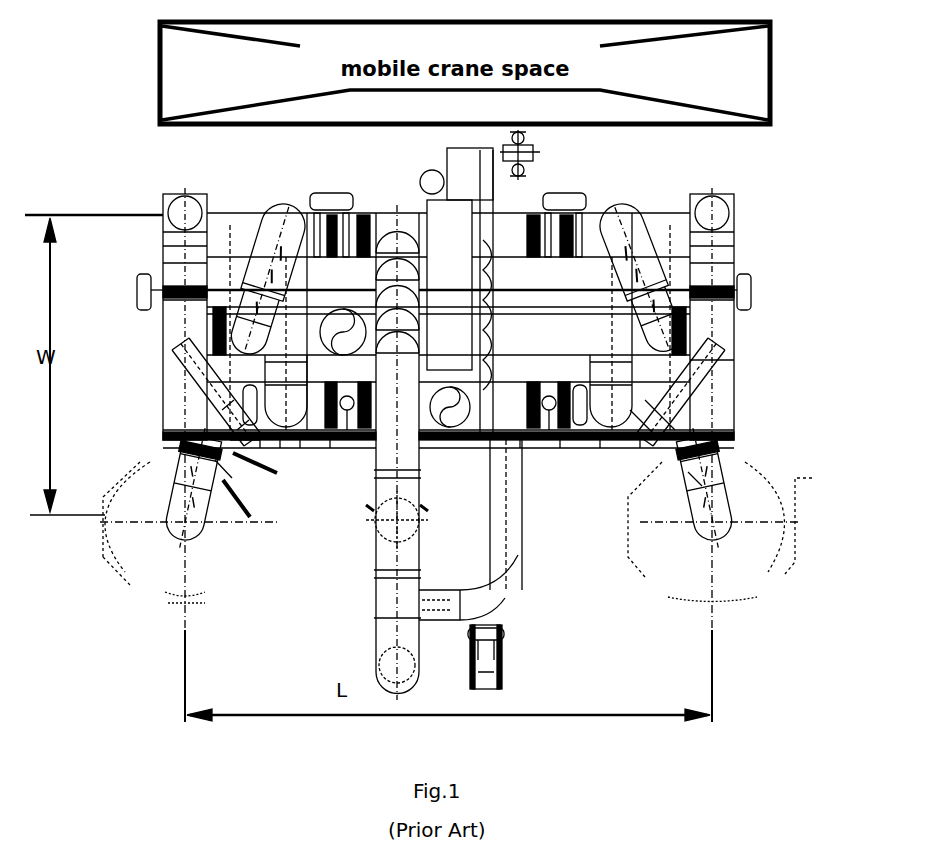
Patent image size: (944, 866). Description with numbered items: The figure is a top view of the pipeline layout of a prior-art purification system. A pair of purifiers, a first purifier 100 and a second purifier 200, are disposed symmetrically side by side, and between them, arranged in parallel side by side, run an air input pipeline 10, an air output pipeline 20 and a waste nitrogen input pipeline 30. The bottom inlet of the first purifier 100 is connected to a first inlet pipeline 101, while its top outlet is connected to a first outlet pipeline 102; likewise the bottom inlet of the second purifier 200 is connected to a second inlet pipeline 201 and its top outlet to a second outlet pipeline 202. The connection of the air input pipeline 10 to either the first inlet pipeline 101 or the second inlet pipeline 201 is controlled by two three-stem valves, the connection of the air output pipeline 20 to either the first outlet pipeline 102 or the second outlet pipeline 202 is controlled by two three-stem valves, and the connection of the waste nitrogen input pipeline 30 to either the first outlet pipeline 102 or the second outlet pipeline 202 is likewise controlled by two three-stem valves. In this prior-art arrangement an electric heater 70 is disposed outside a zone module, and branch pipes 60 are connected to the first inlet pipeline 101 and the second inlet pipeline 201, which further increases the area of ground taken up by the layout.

The air input pipeline 10 is at (554, 336).
The air output pipeline 20 is at (484, 412).
The waste nitrogen input pipeline 30 is at (370, 213).
The branch pipes 60 is at (262, 462).
The electric heater 70 is at (538, 151).
The first purifier 100 is at (148, 576).
The first inlet pipeline 101 is at (267, 486).
The first outlet pipeline 102 is at (238, 586).
The second purifier 200 is at (743, 570).
The second inlet pipeline 201 is at (720, 332).
The second outlet pipeline 202 is at (705, 492).